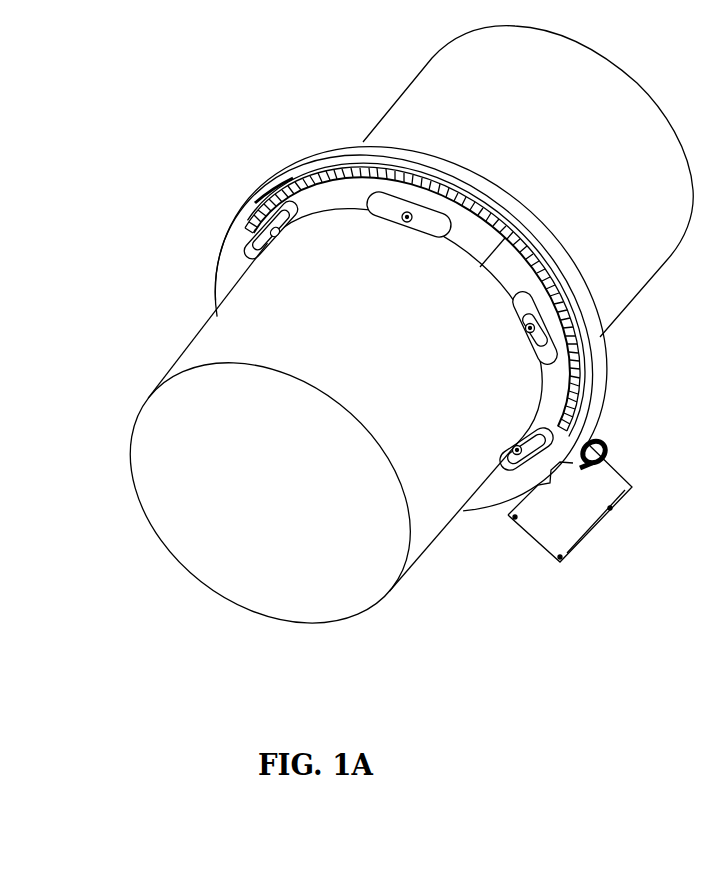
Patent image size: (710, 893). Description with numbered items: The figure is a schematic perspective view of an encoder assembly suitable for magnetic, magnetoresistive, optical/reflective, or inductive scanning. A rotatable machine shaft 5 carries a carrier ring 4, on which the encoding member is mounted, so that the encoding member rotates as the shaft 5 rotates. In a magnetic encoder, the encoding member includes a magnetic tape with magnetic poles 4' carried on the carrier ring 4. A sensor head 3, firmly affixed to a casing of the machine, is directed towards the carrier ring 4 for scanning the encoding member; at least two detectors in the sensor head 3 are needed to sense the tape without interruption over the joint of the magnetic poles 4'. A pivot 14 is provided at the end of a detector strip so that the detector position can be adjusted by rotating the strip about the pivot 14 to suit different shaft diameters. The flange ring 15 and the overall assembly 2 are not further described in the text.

The motor housing with flange 2 is at (226, 278).
The sensor head 3 is at (615, 484).
The carrier ring 4 is at (411, 247).
The magnetic poles 4' is at (460, 301).
The shaft 5 is at (288, 520).
The pivot 14 is at (405, 222).
The flange rim 15 is at (303, 156).